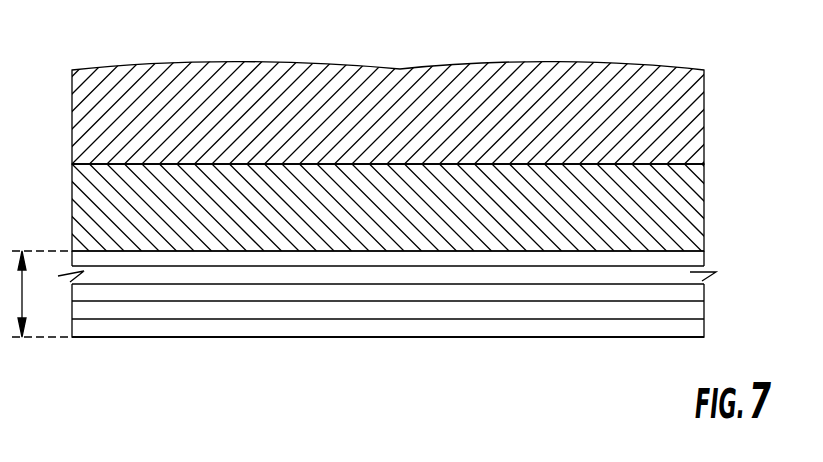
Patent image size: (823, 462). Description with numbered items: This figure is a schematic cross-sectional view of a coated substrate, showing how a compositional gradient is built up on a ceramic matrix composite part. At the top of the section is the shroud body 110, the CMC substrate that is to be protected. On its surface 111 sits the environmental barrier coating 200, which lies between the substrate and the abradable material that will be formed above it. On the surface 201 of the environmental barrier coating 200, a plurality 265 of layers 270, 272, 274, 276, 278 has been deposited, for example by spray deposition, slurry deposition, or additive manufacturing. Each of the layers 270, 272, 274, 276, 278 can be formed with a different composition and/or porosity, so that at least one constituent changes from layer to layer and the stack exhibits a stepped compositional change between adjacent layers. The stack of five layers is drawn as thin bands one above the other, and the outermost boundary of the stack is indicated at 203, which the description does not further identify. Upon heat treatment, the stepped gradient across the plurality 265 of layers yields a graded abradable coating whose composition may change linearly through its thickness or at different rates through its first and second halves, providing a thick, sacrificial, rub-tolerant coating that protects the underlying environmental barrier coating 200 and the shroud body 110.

The shroud body 110 is at (400, 87).
The environmental barrier coating 200 is at (723, 165).
The plurality of layers 265 is at (723, 253).
The layer 270 is at (537, 262).
The layer 272 is at (573, 274).
The layer 274 is at (622, 293).
The layer 276 is at (108, 312).
The layer 278 is at (296, 327).
The surface 111 is at (233, 165).
The surface of the EBC 201 is at (493, 252).
The second surface of stack 203 is at (367, 338).